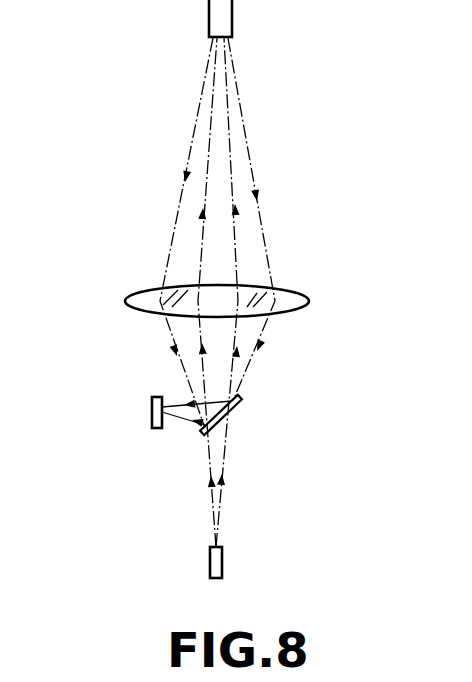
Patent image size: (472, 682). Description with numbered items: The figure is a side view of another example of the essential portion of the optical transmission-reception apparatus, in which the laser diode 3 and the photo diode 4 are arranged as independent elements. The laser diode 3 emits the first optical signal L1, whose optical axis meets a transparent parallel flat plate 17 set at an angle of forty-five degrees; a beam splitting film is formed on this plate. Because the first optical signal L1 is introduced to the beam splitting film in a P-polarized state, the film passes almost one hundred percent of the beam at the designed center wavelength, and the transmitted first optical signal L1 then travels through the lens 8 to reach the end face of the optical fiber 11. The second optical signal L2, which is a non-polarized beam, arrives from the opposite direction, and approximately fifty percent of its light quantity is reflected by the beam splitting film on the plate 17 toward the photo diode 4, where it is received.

The optical fiber 11 is at (233, 29).
The first optical signal L1 is at (202, 197).
The second optical signal L2 is at (247, 145).
The lens 8 is at (295, 293).
The transparent parallel flat plate 17 is at (238, 405).
The photo diode 4 is at (152, 411).
The laser diode 3 is at (222, 555).